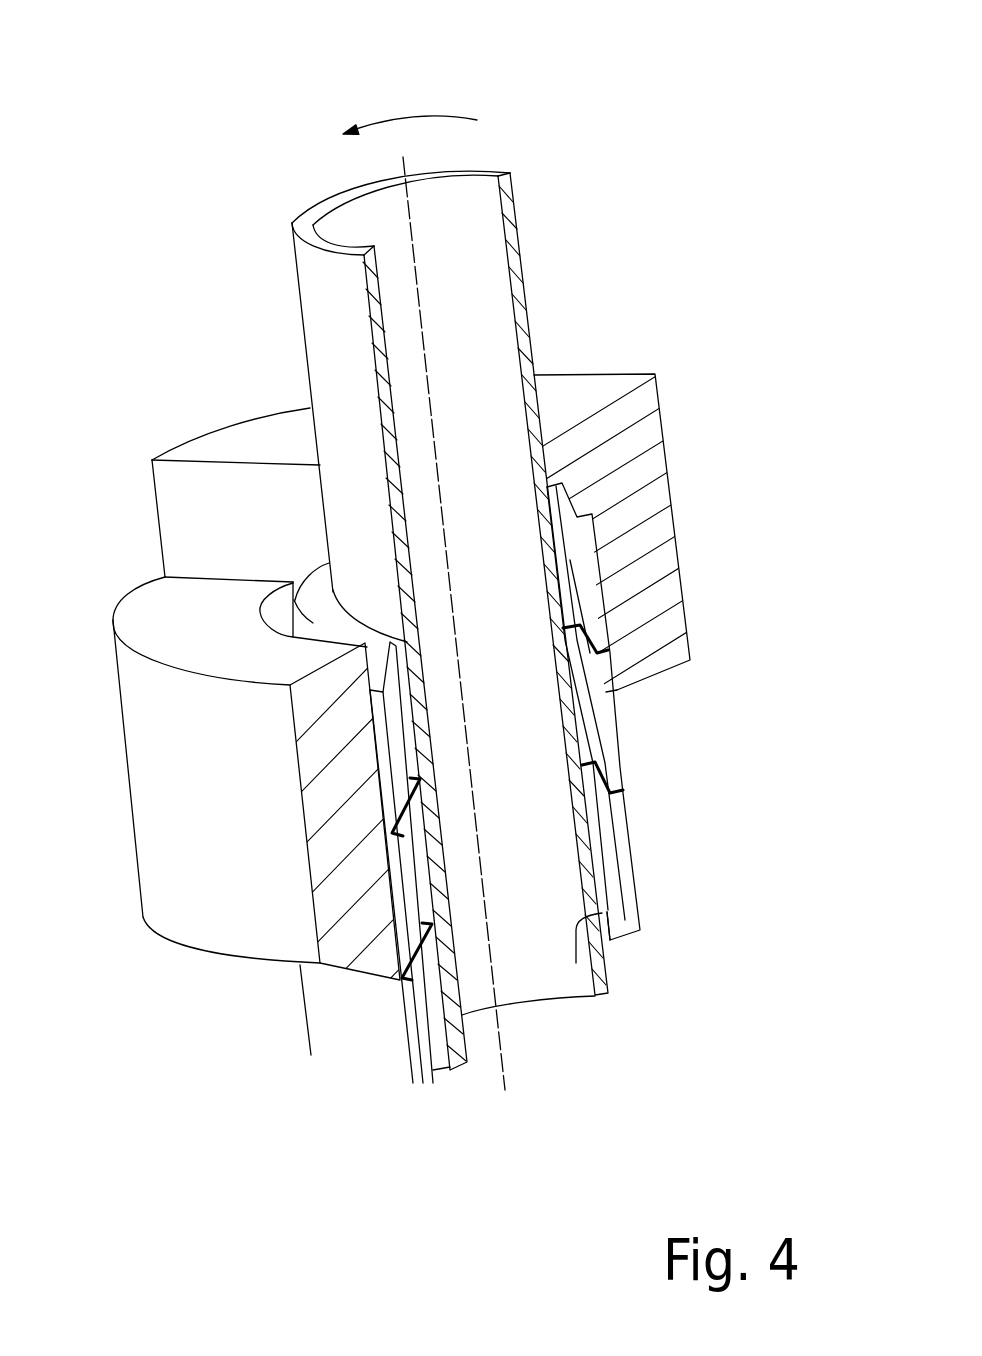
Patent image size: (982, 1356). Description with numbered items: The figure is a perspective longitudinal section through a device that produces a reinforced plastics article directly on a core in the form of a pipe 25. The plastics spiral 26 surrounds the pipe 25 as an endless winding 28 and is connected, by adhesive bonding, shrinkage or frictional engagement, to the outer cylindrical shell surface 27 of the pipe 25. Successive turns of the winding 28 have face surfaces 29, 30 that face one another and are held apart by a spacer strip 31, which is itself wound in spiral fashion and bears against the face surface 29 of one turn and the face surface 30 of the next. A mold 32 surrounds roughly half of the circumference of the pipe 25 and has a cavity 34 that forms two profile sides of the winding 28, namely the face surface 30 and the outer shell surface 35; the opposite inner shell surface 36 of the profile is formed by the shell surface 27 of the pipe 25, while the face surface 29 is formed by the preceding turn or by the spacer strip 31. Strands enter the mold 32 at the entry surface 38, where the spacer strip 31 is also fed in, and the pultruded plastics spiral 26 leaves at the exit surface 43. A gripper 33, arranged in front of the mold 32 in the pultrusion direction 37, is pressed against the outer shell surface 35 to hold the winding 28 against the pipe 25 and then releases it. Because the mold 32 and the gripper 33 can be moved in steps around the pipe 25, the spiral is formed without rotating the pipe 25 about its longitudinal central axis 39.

The pipe 25 is at (482, 202).
The plastics spiral 26 is at (652, 838).
The outer cylindrical shell surface 27 is at (325, 302).
The winding 28 is at (593, 527).
The face surface 29 is at (617, 917).
The face surface 30 is at (313, 625).
The spacer strip 31 is at (607, 773).
The mold 32 is at (215, 443).
The gripper 33 is at (202, 917).
The cavity 34 is at (590, 593).
The outer shell surface 35 is at (617, 708).
The inner shell surface 36 is at (576, 963).
The pultrusion direction 37 is at (425, 110).
The entry surface 38 is at (653, 460).
The longitudinal central axis 39 is at (503, 1053).
The exit surface 43 is at (190, 487).